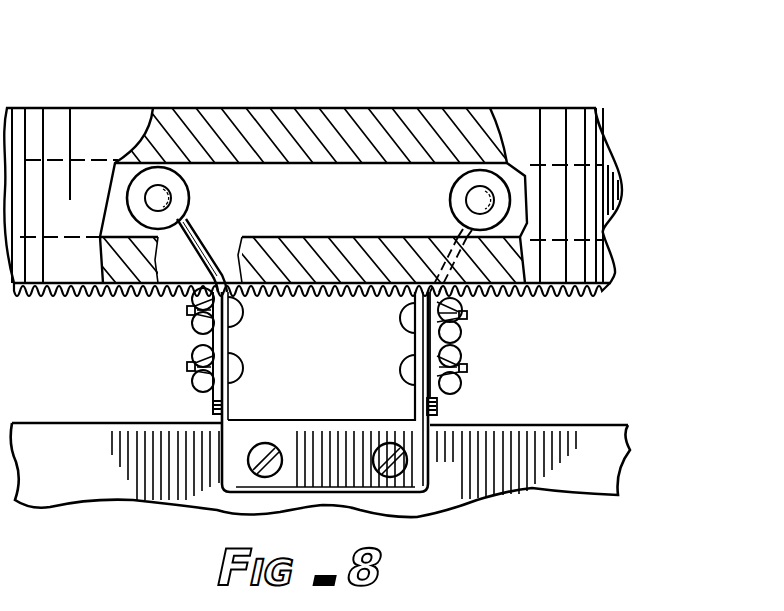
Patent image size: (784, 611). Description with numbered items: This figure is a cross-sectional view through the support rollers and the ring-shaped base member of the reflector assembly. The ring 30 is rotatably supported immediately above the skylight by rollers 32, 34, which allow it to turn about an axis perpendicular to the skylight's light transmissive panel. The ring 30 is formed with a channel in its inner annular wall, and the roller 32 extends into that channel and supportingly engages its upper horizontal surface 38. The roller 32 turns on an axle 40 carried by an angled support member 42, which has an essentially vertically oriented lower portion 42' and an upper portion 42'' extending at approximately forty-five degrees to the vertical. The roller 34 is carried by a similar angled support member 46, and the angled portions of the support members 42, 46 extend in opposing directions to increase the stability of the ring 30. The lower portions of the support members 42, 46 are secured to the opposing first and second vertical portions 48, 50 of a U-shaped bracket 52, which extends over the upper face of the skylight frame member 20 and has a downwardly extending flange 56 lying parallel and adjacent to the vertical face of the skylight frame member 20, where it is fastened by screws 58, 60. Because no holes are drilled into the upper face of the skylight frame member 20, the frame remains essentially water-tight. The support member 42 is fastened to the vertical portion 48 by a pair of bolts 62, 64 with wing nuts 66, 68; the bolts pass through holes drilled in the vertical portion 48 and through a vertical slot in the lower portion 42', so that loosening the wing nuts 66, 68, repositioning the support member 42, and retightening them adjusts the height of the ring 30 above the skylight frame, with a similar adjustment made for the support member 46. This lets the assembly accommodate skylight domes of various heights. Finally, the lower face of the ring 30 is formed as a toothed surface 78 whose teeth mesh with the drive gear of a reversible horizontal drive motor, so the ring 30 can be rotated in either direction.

The skylight frame member 20 is at (88, 472).
The ring 30 is at (301, 108).
The roller 32 is at (182, 206).
The roller 34 is at (455, 192).
The upper horizontal surface 38 is at (287, 165).
The axle 40 is at (166, 197).
The angled support member 42 is at (231, 249).
The lower portion 42' is at (173, 353).
The upper portion 42'' is at (187, 250).
The angled support member 46 is at (470, 258).
The first vertical portion 48 is at (226, 345).
The second vertical portion 50 is at (415, 340).
The U-shaped bracket 52 is at (302, 420).
The downwardly extending flange 56 is at (412, 458).
The screw 58 is at (283, 466).
The screw 60 is at (374, 455).
The bolt 62 is at (240, 316).
The bolt 64 is at (242, 370).
The wing nut 66 is at (186, 297).
The wing nut 68 is at (198, 390).
The toothed surface 78 is at (92, 303).